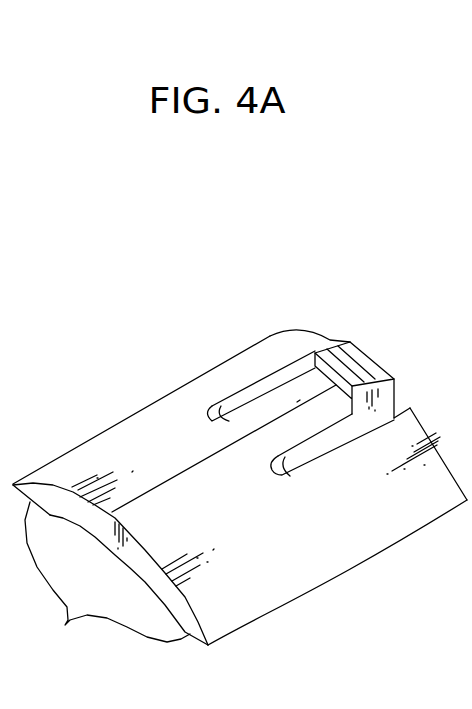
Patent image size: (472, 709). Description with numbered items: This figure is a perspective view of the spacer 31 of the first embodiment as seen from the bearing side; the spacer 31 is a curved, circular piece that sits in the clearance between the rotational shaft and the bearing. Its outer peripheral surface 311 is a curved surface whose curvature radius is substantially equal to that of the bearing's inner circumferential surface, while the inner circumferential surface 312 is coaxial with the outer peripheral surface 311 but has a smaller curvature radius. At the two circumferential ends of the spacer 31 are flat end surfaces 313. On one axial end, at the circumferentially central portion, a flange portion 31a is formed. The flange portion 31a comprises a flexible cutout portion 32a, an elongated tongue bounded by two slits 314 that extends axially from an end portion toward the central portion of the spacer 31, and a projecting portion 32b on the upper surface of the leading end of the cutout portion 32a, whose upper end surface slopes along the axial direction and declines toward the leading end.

The spacer 31 is at (242, 433).
The flange portion 31a is at (245, 262).
The cutout portion 32a is at (297, 402).
The projecting portion 32b is at (378, 371).
The outer peripheral surface 311 is at (182, 408).
The inner circumferential surface 312 is at (433, 421).
The end surfaces 313 is at (110, 572).
The slits 314 is at (213, 422).